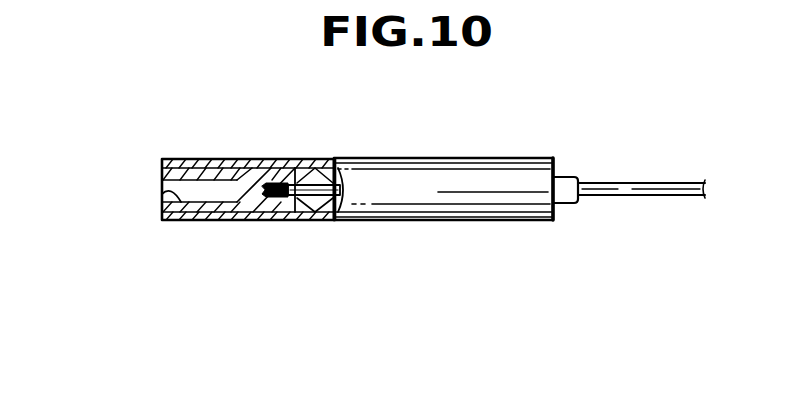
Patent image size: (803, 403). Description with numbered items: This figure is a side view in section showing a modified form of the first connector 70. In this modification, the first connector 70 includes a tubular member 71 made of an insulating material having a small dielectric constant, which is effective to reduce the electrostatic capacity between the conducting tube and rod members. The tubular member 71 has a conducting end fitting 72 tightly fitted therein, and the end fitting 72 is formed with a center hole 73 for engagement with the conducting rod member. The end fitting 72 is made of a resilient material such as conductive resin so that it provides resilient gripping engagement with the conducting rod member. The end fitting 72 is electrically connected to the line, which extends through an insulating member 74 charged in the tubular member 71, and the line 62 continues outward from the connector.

The optical fiber cable 62 is at (626, 186).
The first connector 70 is at (465, 158).
The tubular member 71 is at (316, 212).
The conducting end fitting 72 is at (250, 168).
The center hole 73 is at (161, 194).
The insulating member 74 is at (324, 175).